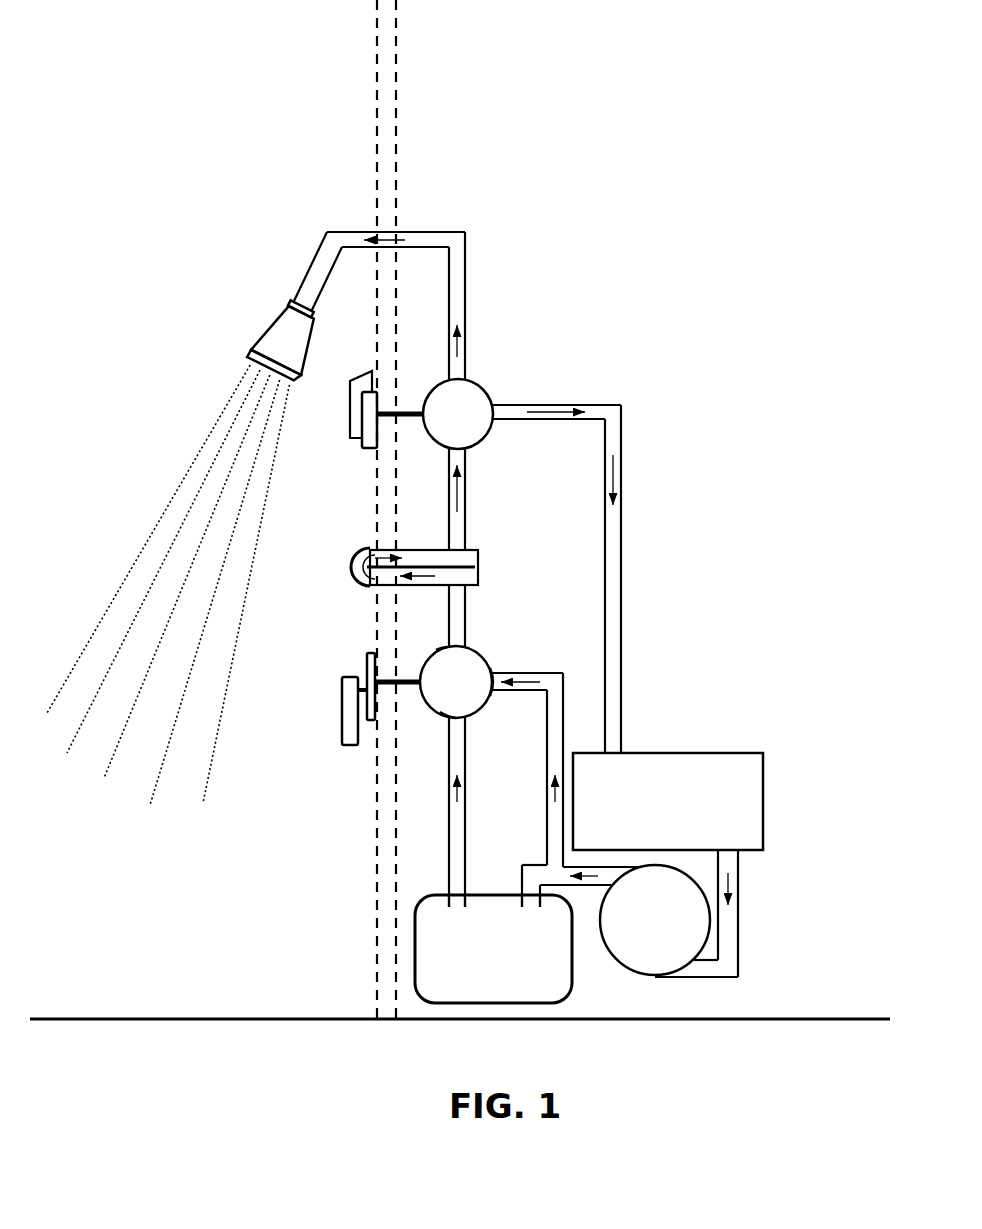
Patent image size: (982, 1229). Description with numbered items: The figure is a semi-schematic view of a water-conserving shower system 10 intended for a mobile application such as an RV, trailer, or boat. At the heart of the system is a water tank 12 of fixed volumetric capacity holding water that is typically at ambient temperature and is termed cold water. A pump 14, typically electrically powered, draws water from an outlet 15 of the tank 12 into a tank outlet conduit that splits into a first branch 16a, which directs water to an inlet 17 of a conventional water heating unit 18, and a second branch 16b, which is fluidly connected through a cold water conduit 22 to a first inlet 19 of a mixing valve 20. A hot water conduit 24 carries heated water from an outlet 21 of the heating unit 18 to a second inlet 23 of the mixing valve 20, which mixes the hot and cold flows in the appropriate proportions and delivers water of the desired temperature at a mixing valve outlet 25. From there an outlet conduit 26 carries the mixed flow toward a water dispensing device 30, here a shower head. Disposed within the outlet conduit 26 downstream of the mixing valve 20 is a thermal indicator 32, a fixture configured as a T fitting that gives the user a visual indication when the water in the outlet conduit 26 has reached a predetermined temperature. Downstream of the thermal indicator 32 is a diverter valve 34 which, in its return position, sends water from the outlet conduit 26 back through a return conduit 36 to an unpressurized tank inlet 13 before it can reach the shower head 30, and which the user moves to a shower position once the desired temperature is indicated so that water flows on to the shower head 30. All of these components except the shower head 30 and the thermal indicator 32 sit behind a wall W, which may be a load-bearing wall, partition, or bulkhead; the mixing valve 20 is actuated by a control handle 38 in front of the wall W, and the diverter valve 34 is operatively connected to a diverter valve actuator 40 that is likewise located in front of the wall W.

The water-conserving shower system 10 is at (566, 204).
The wall W is at (397, 86).
The water dispensing device 30 is at (268, 330).
The diverter valve 34 is at (482, 382).
The diverter valve actuator 40 is at (362, 445).
The thermal indicator 32 is at (348, 567).
The outlet conduit 26 is at (466, 610).
The mixing valve outlet 25 is at (445, 647).
The mixing valve 20 is at (486, 657).
The cold water conduit 22 is at (548, 672).
The return conduit 36 is at (622, 636).
The tank inlet 13 is at (622, 753).
The tank 12 is at (672, 753).
The first inlet 19 is at (494, 692).
The second branch 16b is at (556, 738).
The control handle 38 is at (342, 706).
The second inlet 23 is at (447, 718).
The hot water conduit 24 is at (458, 822).
The first branch 16a is at (533, 878).
The inlet 17 is at (530, 905).
The outlet 21 is at (455, 906).
The water heating unit 18 is at (415, 958).
The pump 14 is at (616, 958).
The outlet 15 is at (726, 851).